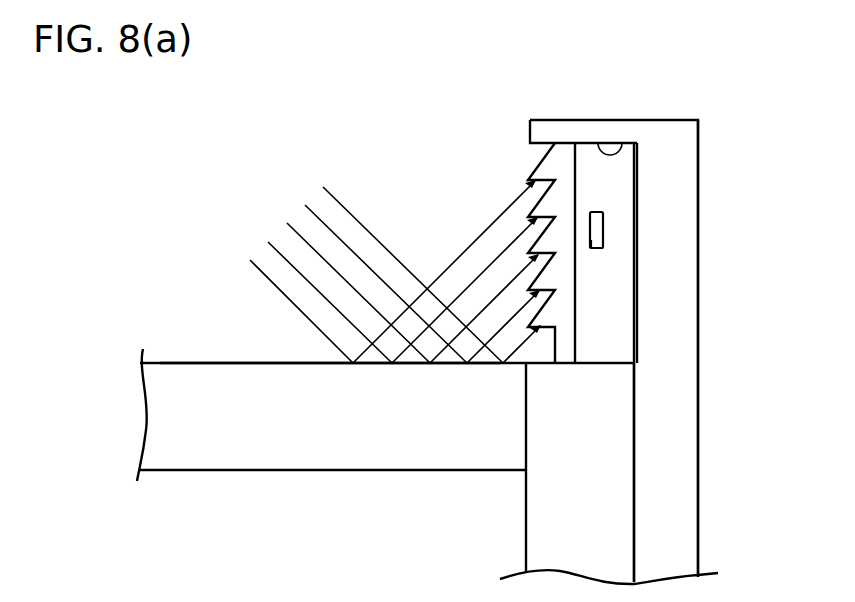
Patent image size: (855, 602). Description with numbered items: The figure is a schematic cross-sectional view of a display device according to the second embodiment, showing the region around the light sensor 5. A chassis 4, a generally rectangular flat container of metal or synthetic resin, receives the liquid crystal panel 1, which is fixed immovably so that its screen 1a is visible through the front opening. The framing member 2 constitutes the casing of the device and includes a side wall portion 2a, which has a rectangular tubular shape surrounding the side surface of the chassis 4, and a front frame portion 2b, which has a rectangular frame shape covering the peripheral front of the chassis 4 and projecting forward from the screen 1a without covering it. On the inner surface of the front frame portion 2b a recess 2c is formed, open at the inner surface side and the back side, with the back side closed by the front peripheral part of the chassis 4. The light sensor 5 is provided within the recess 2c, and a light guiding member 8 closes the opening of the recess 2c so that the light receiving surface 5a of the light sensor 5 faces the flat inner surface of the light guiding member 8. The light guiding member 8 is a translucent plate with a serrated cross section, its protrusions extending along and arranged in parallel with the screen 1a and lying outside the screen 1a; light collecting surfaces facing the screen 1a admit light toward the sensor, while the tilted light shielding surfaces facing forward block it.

The liquid crystal panel 1 is at (205, 382).
The screen 1a is at (243, 362).
The framing member 2 is at (648, 319).
The side wall portion 2a is at (678, 510).
The front frame portion 2b is at (563, 130).
The recess 2c is at (620, 146).
The chassis 4 is at (540, 520).
The light sensor 5 is at (598, 221).
The light receiving surface 5a is at (590, 244).
The light guiding member 8 is at (548, 162).